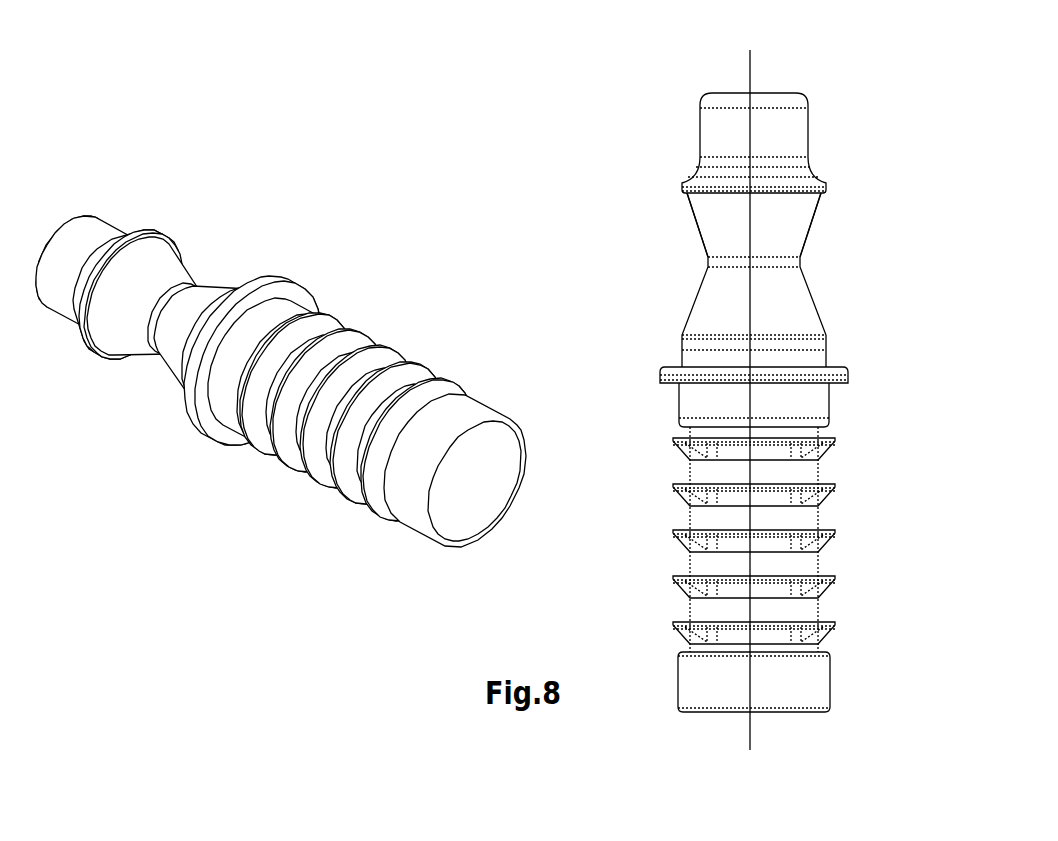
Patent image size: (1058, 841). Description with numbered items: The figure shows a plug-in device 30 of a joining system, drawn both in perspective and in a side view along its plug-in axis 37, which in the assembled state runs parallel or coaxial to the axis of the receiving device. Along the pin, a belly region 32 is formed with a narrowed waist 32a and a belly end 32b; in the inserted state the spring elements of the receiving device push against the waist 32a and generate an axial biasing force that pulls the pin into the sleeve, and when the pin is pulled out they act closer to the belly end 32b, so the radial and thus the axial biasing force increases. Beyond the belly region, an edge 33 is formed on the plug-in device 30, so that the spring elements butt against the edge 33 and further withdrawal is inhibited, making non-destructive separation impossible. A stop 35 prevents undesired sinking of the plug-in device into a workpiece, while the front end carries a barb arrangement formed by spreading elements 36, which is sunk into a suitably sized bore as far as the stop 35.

The plug-in device 30 is at (472, 395).
The belly region 32 is at (727, 228).
The waist 32a is at (779, 237).
The belly end 32b is at (716, 206).
The edge 33 is at (827, 190).
The stop 35 is at (667, 382).
The spreading elements 36 is at (664, 566).
The plug-in axis 37 is at (750, 730).